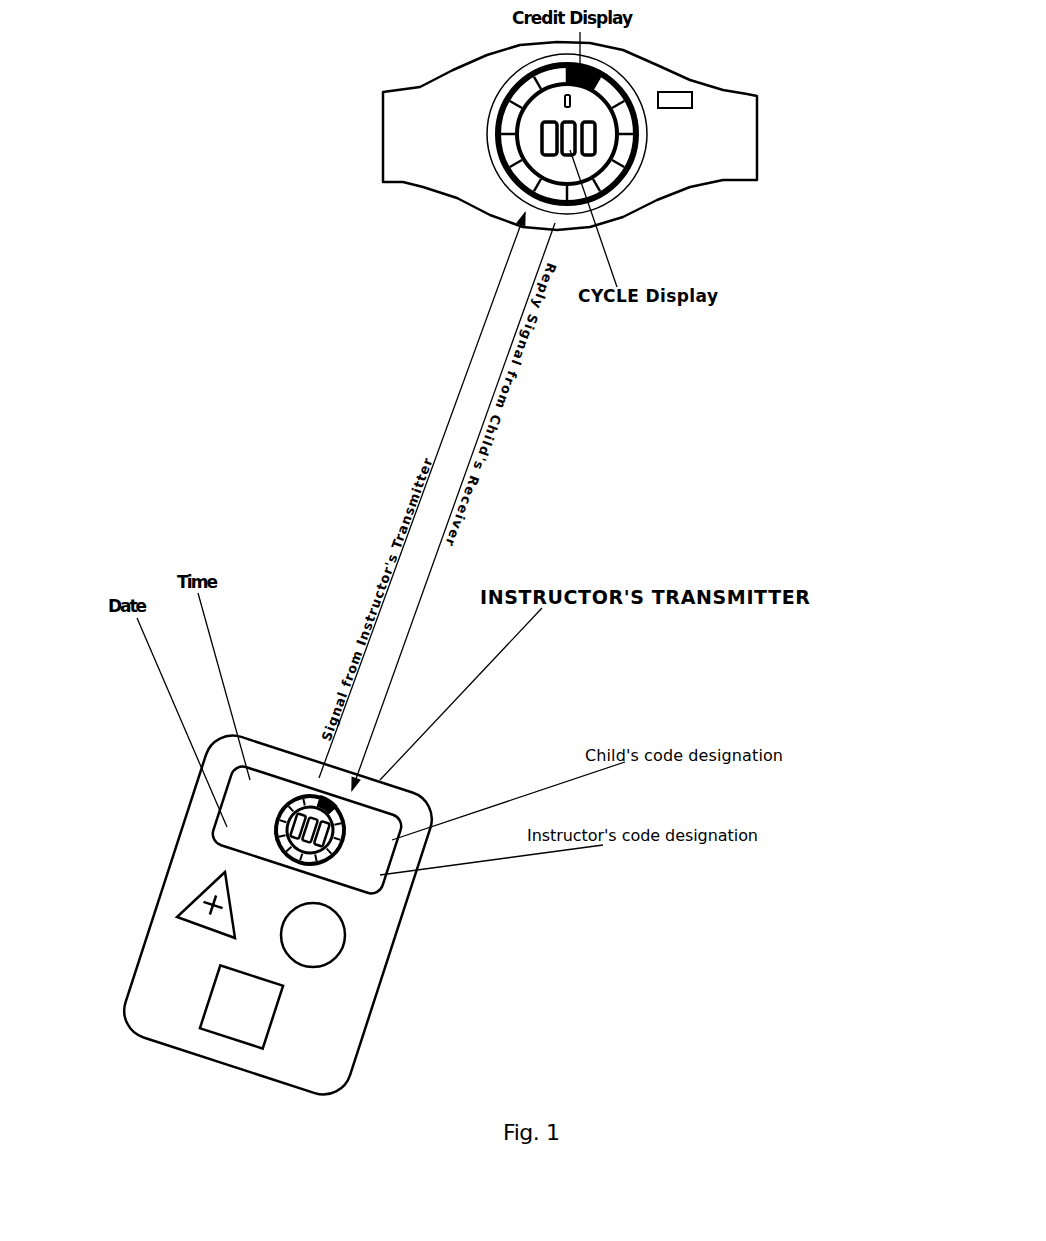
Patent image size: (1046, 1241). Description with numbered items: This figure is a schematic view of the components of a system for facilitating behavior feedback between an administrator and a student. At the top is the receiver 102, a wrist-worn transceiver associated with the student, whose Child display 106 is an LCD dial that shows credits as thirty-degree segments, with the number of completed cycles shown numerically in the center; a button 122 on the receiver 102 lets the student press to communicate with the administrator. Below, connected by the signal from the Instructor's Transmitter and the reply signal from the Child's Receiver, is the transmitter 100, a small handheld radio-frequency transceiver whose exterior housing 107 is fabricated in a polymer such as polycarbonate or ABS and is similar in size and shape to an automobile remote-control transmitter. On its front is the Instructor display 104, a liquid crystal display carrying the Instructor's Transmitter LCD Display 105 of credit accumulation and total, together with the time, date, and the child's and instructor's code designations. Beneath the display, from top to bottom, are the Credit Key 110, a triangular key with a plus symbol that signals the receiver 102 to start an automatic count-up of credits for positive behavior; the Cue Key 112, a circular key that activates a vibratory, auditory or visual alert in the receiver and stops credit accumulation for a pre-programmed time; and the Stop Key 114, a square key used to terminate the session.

The transmitter 100 is at (357, 1027).
The receiver 102 is at (417, 187).
The Instructor display 104 is at (395, 815).
The Instructor's Transmitter LCD Display 105 is at (295, 798).
The Child display 106 is at (670, 147).
The exterior housing 107 is at (173, 1013).
The Credit Key 110 is at (195, 912).
The Cue Key 112 is at (338, 937).
The Stop Key 114 is at (217, 995).
The button 122 is at (677, 100).